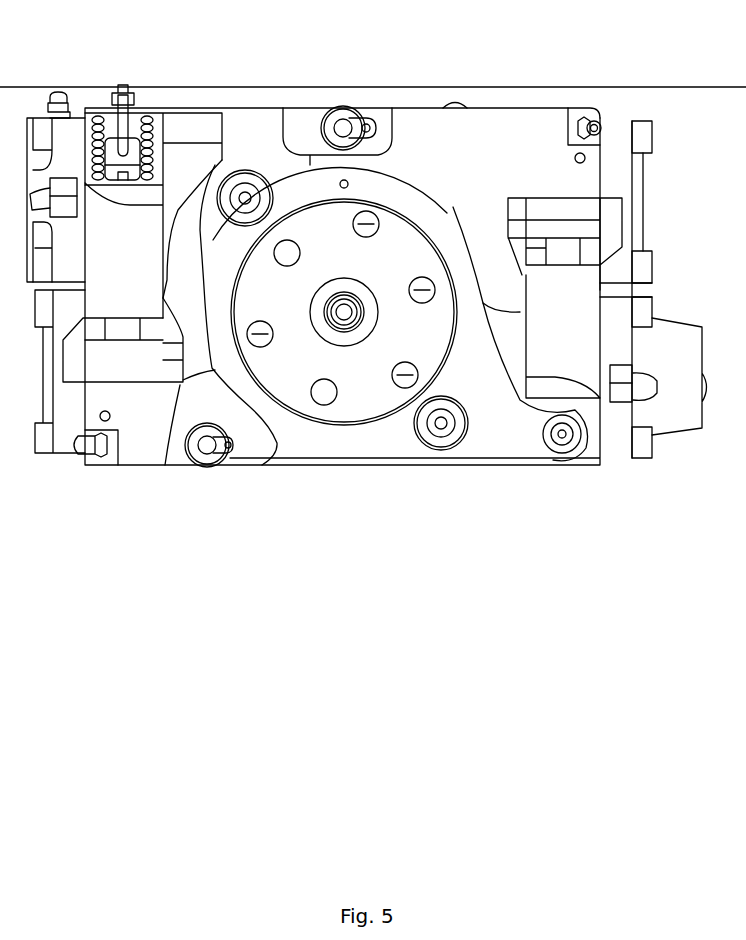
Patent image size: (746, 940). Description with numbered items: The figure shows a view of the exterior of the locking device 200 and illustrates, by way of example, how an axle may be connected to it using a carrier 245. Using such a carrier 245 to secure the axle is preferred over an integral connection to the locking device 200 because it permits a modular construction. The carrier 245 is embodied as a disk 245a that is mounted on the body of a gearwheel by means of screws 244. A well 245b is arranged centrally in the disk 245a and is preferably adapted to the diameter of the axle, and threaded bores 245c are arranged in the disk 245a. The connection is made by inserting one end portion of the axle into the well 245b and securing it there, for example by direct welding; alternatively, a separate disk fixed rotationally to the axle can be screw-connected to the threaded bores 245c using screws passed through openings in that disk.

The locking device 200 is at (310, 519).
The screws 244 is at (163, 463).
The carrier 245 is at (409, 213).
The disk 245a is at (290, 381).
The well 245b is at (358, 337).
The threaded bores 245c is at (427, 288).